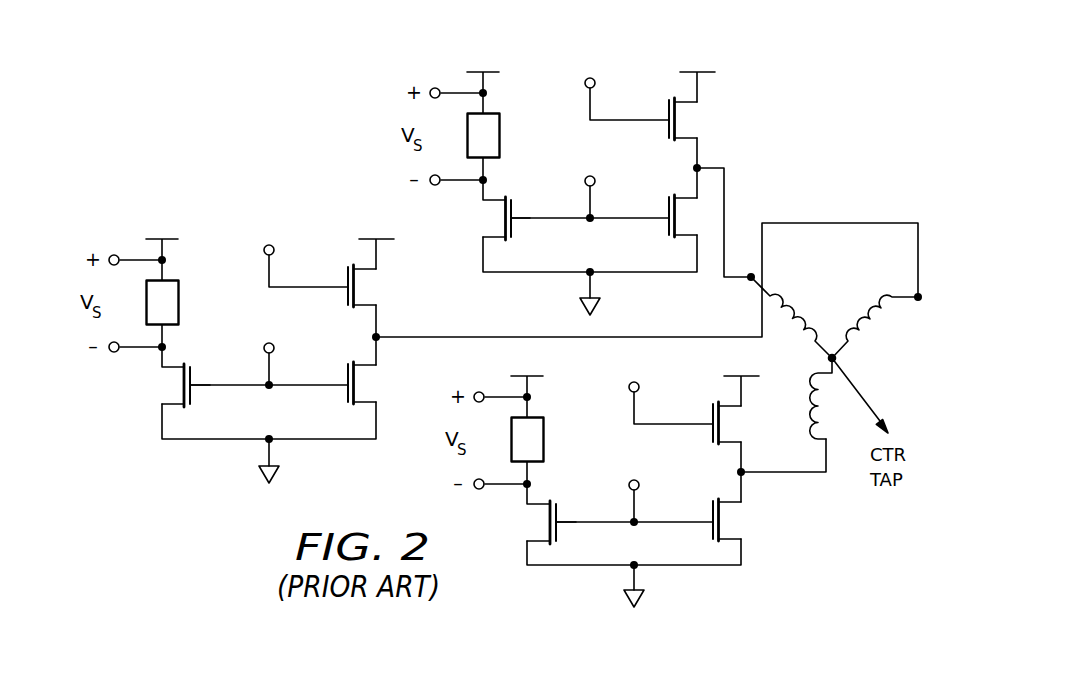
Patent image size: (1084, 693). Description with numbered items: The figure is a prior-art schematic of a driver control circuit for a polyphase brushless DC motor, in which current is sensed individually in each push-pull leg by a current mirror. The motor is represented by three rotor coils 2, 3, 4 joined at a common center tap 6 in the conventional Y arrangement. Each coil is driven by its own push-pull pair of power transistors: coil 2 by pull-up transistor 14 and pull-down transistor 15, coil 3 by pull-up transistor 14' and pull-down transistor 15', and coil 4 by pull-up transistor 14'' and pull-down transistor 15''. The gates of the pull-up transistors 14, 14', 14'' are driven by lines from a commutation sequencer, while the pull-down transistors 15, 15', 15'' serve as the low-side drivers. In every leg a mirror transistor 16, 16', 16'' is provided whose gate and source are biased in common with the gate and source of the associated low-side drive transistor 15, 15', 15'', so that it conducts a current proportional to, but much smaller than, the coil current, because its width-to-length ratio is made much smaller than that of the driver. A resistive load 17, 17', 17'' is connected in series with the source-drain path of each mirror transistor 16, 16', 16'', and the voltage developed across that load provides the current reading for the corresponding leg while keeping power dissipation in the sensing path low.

The motor coil 2 is at (779, 288).
The motor coil 3 is at (883, 288).
The motor coil 4 is at (808, 400).
The center tap 6 is at (828, 358).
The pull-up transistor 14 is at (656, 115).
The pull-up transistor 14' is at (334, 283).
The pull-up transistor 14'' is at (698, 419).
The pull-down transistor 15 is at (657, 210).
The pull-down transistor 15' is at (335, 378).
The pull-down transistor 15'' is at (699, 515).
The mirror transistor 16 is at (526, 226).
The mirror transistor 16' is at (207, 393).
The mirror transistor 16'' is at (575, 530).
The resistive load 17 is at (513, 137).
The resistive load 17' is at (195, 304).
The resistive load 17'' is at (563, 441).